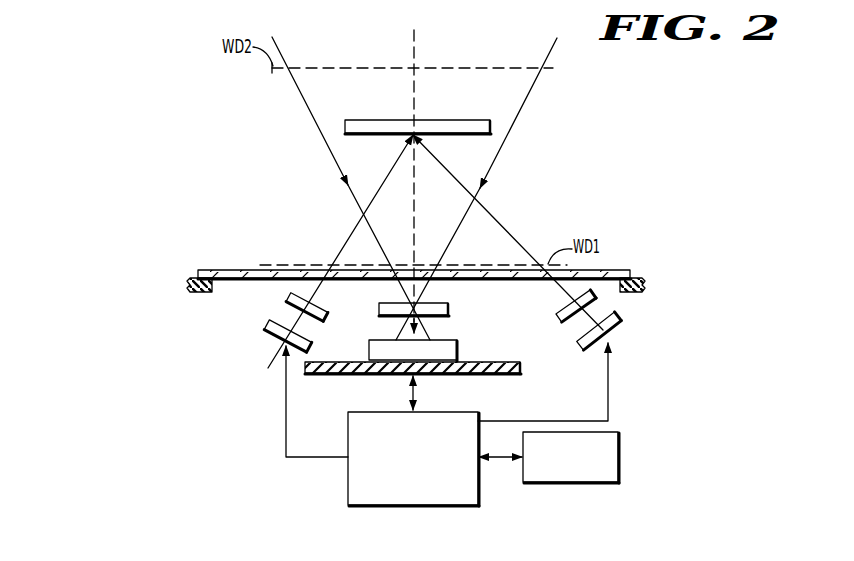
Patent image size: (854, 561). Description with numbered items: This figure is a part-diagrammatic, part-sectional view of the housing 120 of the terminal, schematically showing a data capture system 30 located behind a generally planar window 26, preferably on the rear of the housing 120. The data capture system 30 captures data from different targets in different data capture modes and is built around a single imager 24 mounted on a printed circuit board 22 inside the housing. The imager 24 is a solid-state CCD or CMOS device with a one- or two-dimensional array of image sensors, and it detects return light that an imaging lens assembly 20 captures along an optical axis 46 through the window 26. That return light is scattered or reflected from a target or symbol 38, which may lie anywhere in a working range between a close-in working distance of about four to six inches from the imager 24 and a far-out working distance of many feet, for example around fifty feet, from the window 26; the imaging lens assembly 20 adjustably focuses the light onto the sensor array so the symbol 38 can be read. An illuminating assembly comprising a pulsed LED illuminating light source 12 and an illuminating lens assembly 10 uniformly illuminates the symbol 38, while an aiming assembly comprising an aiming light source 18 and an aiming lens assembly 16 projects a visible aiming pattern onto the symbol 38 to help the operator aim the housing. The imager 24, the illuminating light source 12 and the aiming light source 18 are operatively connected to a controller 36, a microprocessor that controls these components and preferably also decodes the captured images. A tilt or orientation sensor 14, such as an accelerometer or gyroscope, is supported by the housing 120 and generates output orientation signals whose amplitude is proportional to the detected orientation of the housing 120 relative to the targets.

The illuminating lens assembly 10 is at (596, 301).
The illuminating light source 12 is at (613, 322).
The tilt or orientation sensor 14 is at (576, 484).
The aiming lens assembly 16 is at (287, 303).
The aiming light source 18 is at (263, 328).
The imaging lens assembly 20 is at (396, 303).
The printed circuit board 22 is at (496, 375).
The imager 24 is at (380, 340).
The window 26 is at (205, 270).
The data capture system 30 is at (527, 217).
The controller 36 is at (410, 507).
The symbol 38 is at (455, 120).
The optical axis 46 is at (415, 50).
The housing 120 is at (633, 280).